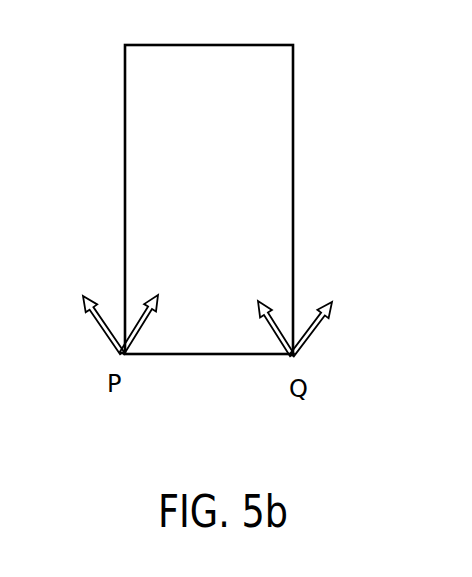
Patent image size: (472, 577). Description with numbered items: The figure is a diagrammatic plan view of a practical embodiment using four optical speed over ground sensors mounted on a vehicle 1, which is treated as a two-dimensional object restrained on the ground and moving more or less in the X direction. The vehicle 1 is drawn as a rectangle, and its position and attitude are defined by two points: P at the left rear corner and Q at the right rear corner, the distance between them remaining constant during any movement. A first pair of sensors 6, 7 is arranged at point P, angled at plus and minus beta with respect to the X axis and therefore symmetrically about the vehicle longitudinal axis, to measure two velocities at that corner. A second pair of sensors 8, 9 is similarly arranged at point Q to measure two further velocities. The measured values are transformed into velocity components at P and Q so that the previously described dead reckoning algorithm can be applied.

The vehicle 1 is at (293, 198).
The sensor 6 is at (93, 318).
The sensor 7 is at (143, 325).
The sensor 8 is at (272, 333).
The sensor 9 is at (317, 333).